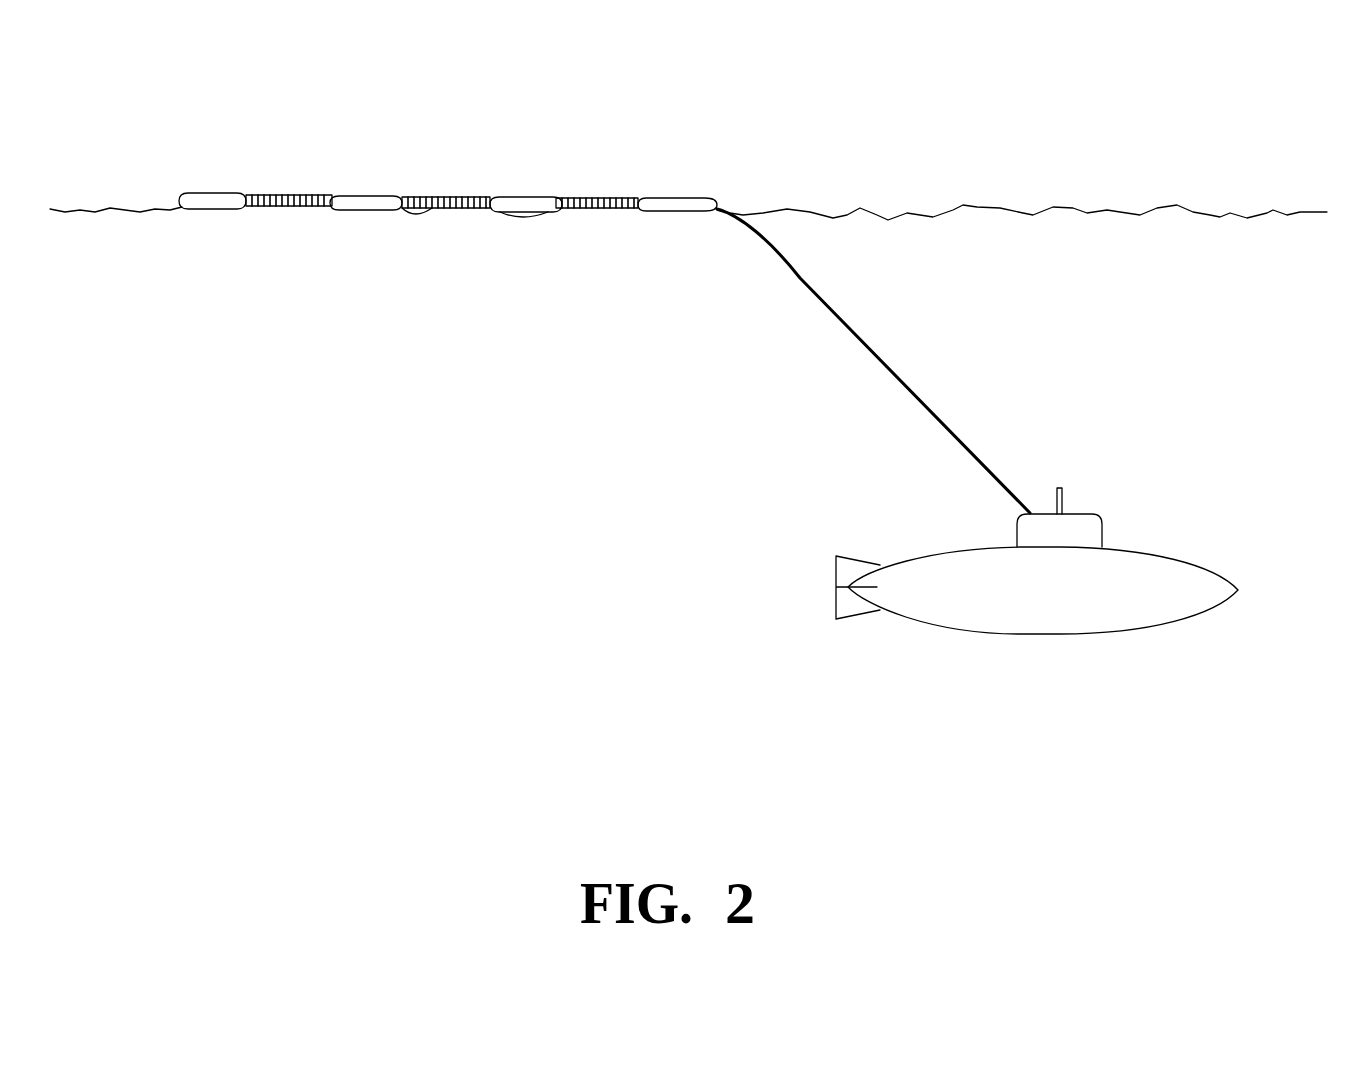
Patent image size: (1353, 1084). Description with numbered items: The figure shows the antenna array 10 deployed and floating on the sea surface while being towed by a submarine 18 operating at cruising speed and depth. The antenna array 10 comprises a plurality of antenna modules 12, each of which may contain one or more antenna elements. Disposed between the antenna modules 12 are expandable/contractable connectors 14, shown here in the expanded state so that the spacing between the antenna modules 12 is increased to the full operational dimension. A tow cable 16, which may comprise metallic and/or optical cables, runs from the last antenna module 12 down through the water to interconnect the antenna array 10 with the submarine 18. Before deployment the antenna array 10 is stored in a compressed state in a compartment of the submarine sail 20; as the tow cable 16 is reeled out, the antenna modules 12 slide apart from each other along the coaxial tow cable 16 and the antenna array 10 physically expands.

The antenna array 10 is at (688, 371).
The antenna module 12 is at (215, 195).
The expandable/contractable connector 14 is at (292, 205).
The tow cable 16 is at (873, 357).
The submarine 18 is at (1157, 587).
The submarine sail 20 is at (1083, 530).